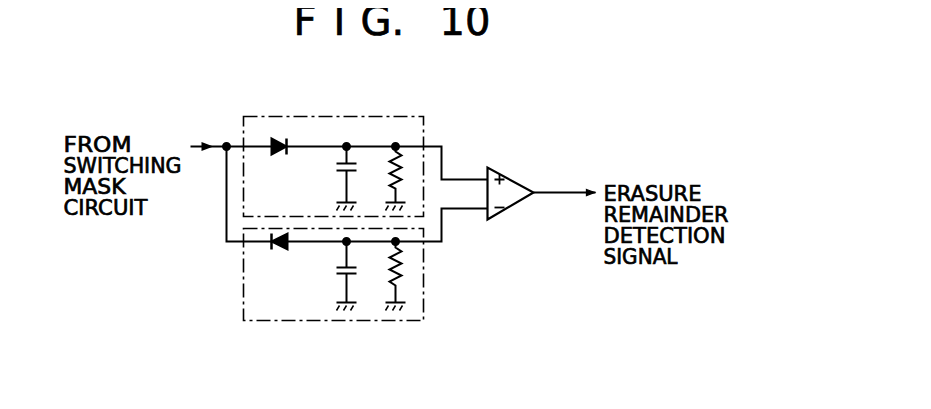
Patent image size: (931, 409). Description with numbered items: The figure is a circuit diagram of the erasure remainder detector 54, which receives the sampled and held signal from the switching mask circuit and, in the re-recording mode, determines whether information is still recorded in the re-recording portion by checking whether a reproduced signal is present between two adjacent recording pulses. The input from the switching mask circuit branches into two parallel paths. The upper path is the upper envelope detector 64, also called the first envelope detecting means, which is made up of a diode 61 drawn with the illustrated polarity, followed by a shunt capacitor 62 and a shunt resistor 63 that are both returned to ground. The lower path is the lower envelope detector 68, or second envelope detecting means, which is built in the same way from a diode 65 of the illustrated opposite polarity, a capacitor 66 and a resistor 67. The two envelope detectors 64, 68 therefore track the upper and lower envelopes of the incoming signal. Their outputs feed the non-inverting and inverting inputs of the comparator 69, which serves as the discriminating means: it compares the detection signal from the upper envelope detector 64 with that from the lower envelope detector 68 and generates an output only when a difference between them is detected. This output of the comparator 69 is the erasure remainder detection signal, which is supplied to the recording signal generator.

The erasure remainder detector 54 is at (254, 340).
The diode 61 is at (277, 157).
The capacitor 62 is at (344, 168).
The resistor 63 is at (393, 180).
The upper envelope detector 64 is at (412, 118).
The diode 65 is at (277, 252).
The capacitor 66 is at (344, 273).
The resistor 67 is at (394, 280).
The lower envelope detector 68 is at (337, 322).
The comparator 69 is at (515, 184).